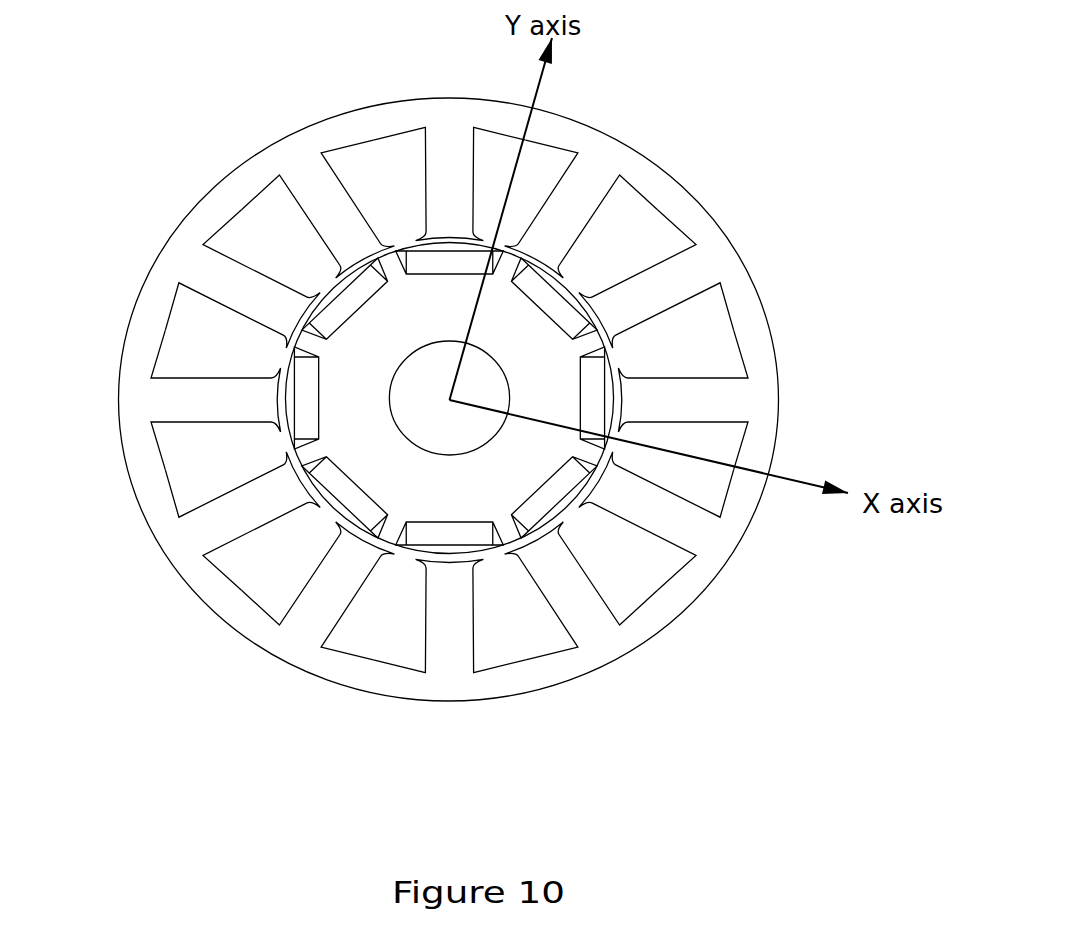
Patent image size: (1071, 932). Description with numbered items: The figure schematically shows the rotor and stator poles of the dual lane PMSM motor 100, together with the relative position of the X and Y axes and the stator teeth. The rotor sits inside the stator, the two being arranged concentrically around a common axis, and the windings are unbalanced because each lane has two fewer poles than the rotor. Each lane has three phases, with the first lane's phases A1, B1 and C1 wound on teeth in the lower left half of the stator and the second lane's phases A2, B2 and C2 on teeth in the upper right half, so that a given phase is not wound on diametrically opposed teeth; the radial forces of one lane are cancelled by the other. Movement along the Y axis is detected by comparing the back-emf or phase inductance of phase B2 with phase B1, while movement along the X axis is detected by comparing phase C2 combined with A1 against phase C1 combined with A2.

The dual lane PMSM motor 100 is at (787, 267).
The phase A of lane 1 A1 is at (679, 531).
The phase A of lane 2 A2 is at (580, 183).
The phase B of lane 1 B1 is at (586, 618).
The phase B of lane 2 B2 is at (687, 263).
The phase C of lane 1 C1 is at (453, 635).
The phase C of lane 2 C2 is at (443, 167).